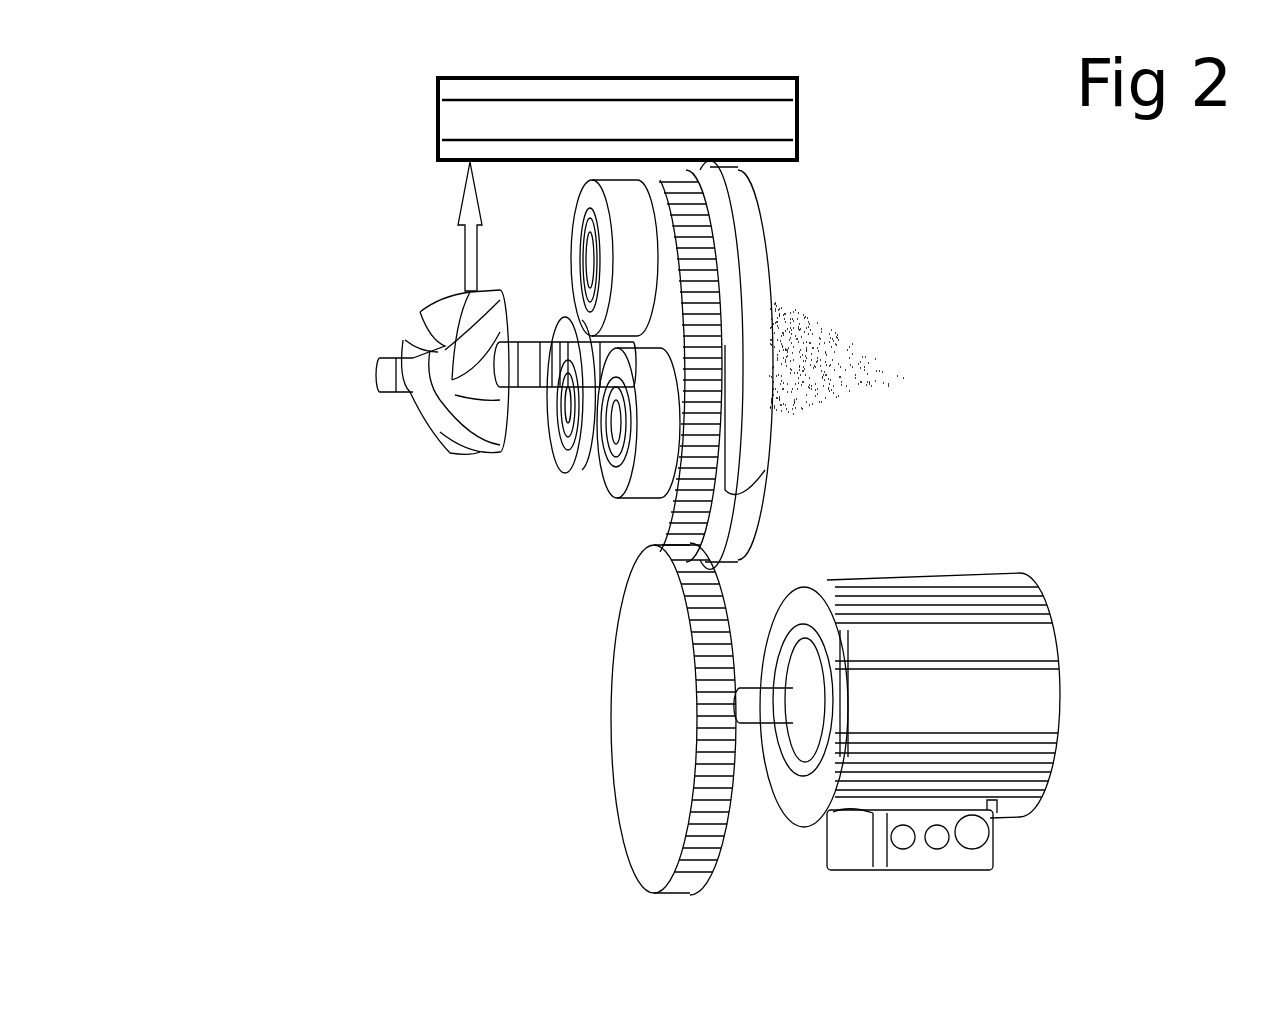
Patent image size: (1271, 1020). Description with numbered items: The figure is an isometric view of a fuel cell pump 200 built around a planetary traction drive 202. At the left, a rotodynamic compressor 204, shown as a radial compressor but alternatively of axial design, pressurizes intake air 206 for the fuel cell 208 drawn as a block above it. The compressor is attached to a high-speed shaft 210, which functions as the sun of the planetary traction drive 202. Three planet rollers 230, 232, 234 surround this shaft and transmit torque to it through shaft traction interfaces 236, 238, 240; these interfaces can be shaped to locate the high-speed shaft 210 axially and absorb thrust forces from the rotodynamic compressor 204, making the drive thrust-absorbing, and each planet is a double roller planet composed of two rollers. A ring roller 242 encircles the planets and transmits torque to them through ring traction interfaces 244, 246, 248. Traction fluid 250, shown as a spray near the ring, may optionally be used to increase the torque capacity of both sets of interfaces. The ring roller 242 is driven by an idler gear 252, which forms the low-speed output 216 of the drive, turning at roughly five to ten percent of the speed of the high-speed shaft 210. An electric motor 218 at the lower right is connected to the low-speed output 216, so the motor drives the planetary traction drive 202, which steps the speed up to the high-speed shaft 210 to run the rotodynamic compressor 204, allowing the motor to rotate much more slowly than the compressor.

The fuel cell pump 200 is at (283, 163).
The planetary traction drive 202 is at (484, 464).
The rotodynamic compressor 204 is at (440, 392).
The intake air 206 is at (463, 196).
The fuel cell 208 is at (587, 122).
The high-speed shaft 210 is at (520, 360).
The low-speed output 216 is at (750, 700).
The electric motor 218 is at (988, 720).
The planet roller 230 is at (567, 447).
The planet roller 232 is at (610, 525).
The planet roller 234 is at (730, 265).
The shaft traction interface 236 is at (598, 388).
The shaft traction interface 238 is at (588, 395).
The shaft traction interface 240 is at (618, 337).
The ring roller 242 is at (720, 493).
The ring traction interface 244 is at (572, 303).
The ring traction interface 246 is at (668, 400).
The ring traction interface 248 is at (647, 241).
The traction fluid 250 is at (897, 382).
The idler gear 252 is at (657, 733).